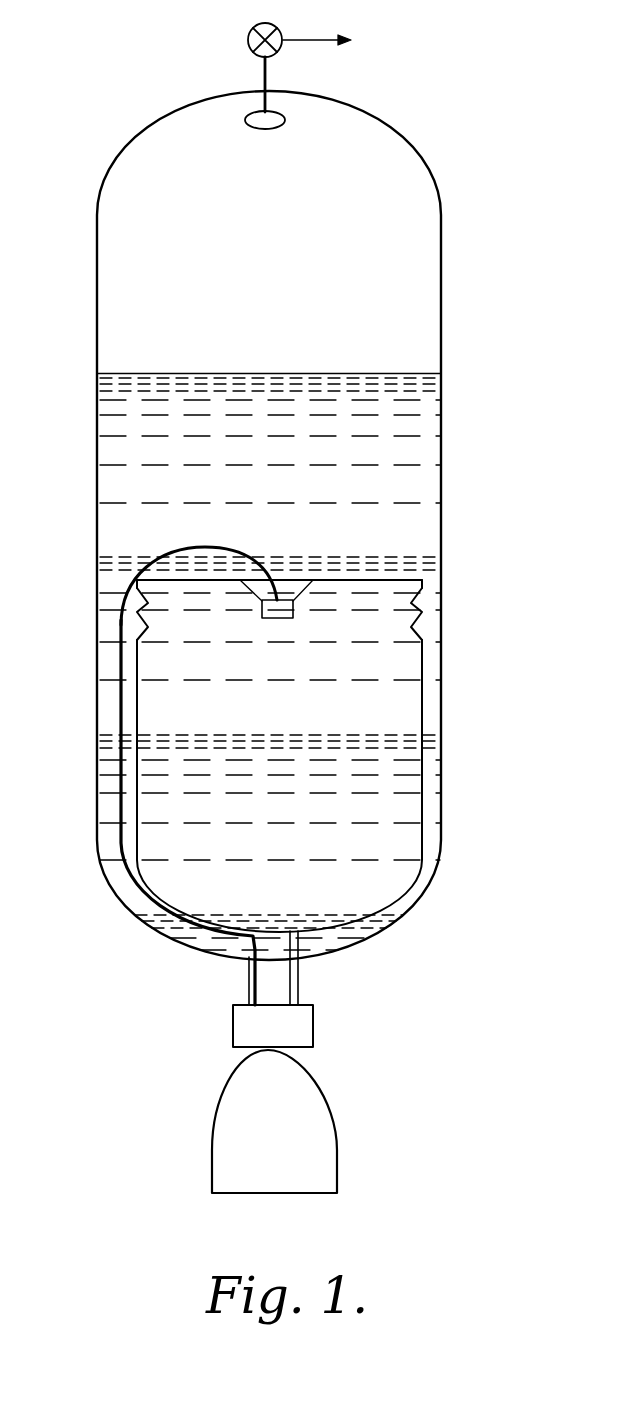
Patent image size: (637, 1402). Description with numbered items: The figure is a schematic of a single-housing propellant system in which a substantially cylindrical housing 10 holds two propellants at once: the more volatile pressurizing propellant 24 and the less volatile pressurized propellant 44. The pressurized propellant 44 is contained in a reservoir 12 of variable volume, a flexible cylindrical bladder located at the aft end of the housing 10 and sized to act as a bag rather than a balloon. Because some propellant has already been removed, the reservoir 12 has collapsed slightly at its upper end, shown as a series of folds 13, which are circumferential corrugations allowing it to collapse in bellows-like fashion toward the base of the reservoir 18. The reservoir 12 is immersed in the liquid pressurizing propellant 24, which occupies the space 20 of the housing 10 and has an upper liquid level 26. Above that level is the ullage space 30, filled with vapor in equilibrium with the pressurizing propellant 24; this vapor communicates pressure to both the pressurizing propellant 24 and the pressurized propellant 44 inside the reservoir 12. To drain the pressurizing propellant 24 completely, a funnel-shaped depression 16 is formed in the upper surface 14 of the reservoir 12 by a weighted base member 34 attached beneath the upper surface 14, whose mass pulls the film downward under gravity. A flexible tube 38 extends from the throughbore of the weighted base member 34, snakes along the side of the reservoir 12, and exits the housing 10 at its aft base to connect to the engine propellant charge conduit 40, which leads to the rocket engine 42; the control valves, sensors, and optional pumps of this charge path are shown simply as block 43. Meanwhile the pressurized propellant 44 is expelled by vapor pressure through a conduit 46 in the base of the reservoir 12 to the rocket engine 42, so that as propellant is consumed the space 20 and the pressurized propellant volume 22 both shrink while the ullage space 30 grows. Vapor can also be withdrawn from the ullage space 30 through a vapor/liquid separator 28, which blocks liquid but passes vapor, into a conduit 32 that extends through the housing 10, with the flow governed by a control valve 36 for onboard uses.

The housing 10 is at (436, 166).
The reservoir 12 is at (422, 640).
The folds 13 is at (426, 599).
The upper surface 14 is at (395, 578).
The funnel-shaped depression 16 is at (284, 572).
The base of the reservoir 18 is at (360, 918).
The space 20 is at (433, 428).
The pressurized propellant volume 22 is at (403, 752).
The pressurizing propellant 24 is at (284, 470).
The upper liquid level 26 is at (418, 373).
The vapor/liquid separator 28 is at (285, 120).
The ullage space 30 is at (284, 259).
The conduit 32 is at (262, 80).
The weighted base member 34 is at (293, 610).
The control valve 36 is at (251, 29).
The flexible tube 38 is at (122, 712).
The engine propellant charge conduit 40 is at (247, 978).
The rocket engine 42 is at (282, 1137).
The block 43 is at (313, 1030).
The pressurized propellant 44 is at (334, 724).
The conduit 46 is at (298, 978).